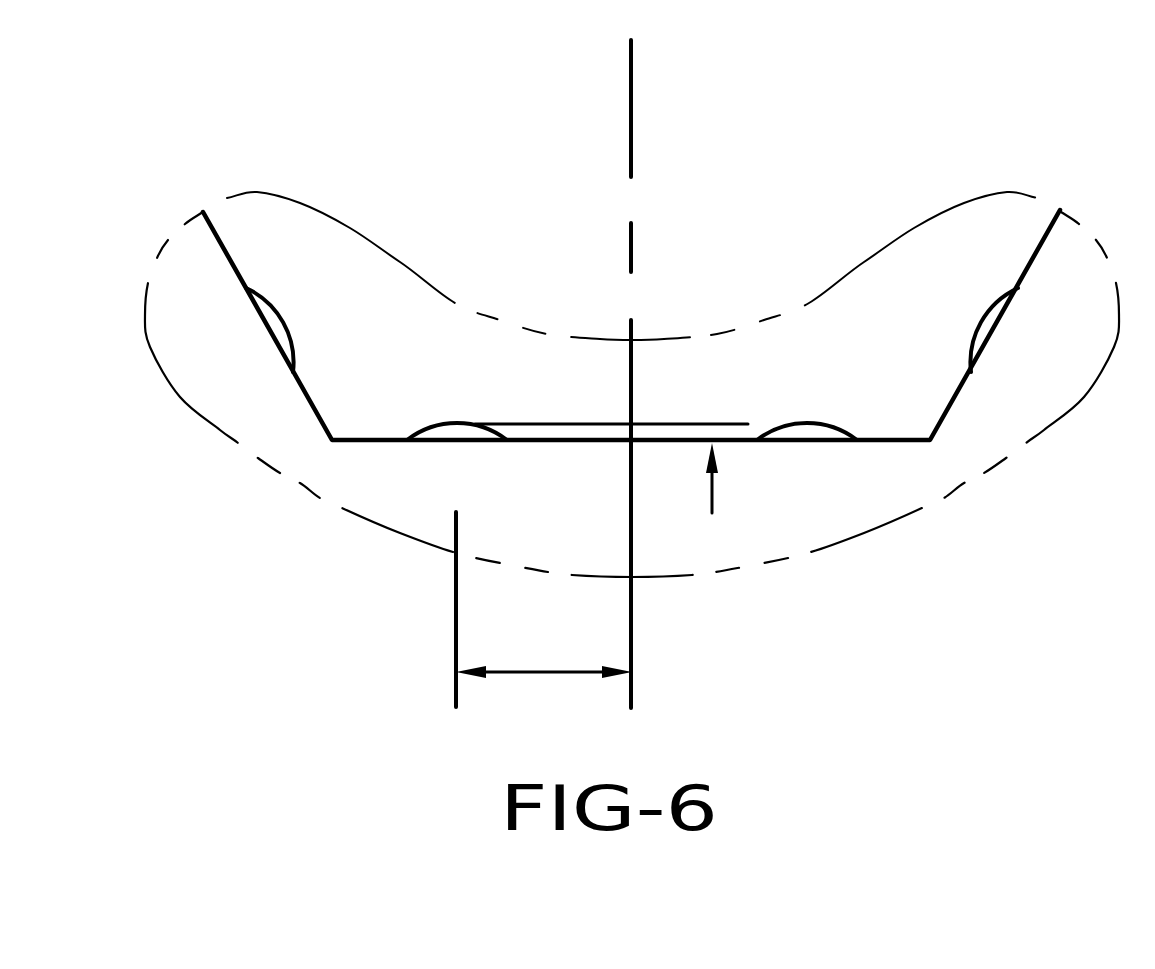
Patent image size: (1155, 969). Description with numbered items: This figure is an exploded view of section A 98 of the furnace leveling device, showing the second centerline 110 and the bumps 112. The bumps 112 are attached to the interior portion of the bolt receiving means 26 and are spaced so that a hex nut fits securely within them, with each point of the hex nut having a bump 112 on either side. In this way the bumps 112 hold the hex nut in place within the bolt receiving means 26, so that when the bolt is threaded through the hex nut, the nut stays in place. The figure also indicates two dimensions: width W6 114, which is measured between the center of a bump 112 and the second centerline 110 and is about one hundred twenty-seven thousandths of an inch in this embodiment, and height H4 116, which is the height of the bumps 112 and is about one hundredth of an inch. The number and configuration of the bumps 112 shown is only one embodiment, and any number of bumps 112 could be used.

The bolt receiving means 26 is at (955, 397).
The section A 98 is at (262, 569).
The second centerline 110 is at (631, 112).
The bumps 112 is at (272, 318).
The width W6 114 is at (542, 672).
The height H4 116 is at (712, 392).